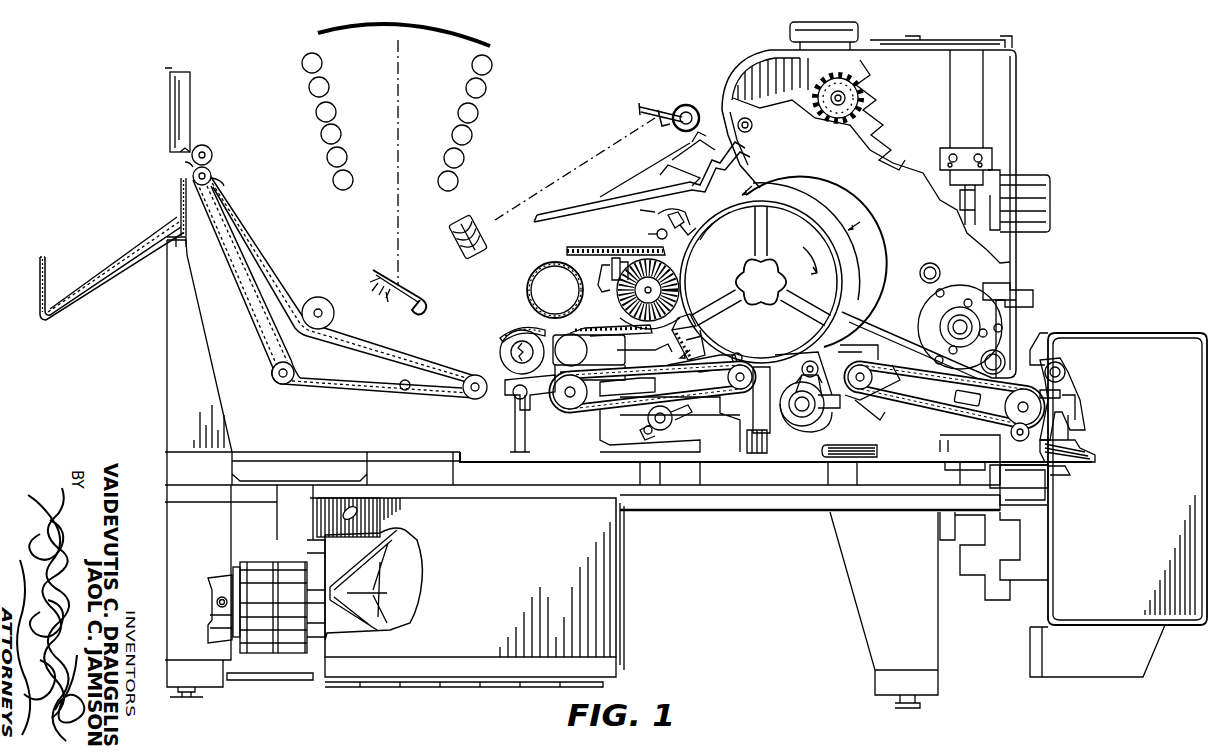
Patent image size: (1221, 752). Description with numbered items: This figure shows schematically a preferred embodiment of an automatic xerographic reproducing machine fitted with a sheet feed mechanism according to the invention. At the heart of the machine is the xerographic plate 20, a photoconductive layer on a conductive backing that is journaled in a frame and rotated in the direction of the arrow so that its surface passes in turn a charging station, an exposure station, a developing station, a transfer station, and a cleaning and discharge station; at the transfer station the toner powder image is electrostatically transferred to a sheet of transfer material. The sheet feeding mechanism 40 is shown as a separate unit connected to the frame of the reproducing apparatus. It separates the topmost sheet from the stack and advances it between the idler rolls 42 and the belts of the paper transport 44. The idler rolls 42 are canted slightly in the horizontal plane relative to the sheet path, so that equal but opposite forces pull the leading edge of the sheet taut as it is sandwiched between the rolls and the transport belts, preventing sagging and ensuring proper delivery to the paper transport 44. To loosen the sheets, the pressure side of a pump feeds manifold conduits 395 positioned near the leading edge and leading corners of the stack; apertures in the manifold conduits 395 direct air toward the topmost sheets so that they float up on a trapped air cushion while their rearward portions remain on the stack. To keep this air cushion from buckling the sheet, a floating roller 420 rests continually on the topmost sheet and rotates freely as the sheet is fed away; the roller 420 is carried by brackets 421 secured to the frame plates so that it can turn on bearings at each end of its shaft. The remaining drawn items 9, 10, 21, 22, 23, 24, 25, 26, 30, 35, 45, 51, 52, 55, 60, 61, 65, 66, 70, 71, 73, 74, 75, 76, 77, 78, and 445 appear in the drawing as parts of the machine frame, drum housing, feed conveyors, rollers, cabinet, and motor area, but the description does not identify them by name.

The frame legs 9 is at (165, 524).
The base frame 10 is at (714, 502).
The xerographic plate 20 is at (848, 257).
The sensing lever 21 is at (655, 216).
The arcuate lamp guide 22 is at (464, 27).
The hook arm 23 is at (384, 270).
The roller cage 24 is at (474, 252).
The pivot arm 25 is at (655, 110).
The drum rim 26 is at (718, 220).
The drum housing 30 is at (1028, 104).
The bracket 35 is at (950, 93).
The sheet feeding mechanism 40 is at (1116, 321).
The idler rolls 42 is at (996, 474).
The paper transport 44 is at (935, 401).
The roller assembly 45 is at (826, 431).
The roller 51 is at (760, 400).
The guide 52 is at (722, 348).
The conveyor belt 55 is at (640, 405).
The roller 60 is at (494, 343).
The feed tray 61 is at (92, 292).
The feed conveyor 65 is at (255, 240).
The guide finger 66 is at (684, 330).
The ink unit 70 is at (540, 249).
The gear wheel 71 is at (676, 283).
The plate 73 is at (668, 255).
The bracket 74 is at (612, 270).
The guide plate 75 is at (622, 313).
The roller 76 is at (528, 296).
The cabinet 77 is at (575, 526).
The motor fan 78 is at (388, 546).
The manifold conduits 395 is at (1055, 470).
The floating roller 420 is at (1080, 440).
The brackets 421 is at (1080, 420).
The bar 445 is at (824, 452).